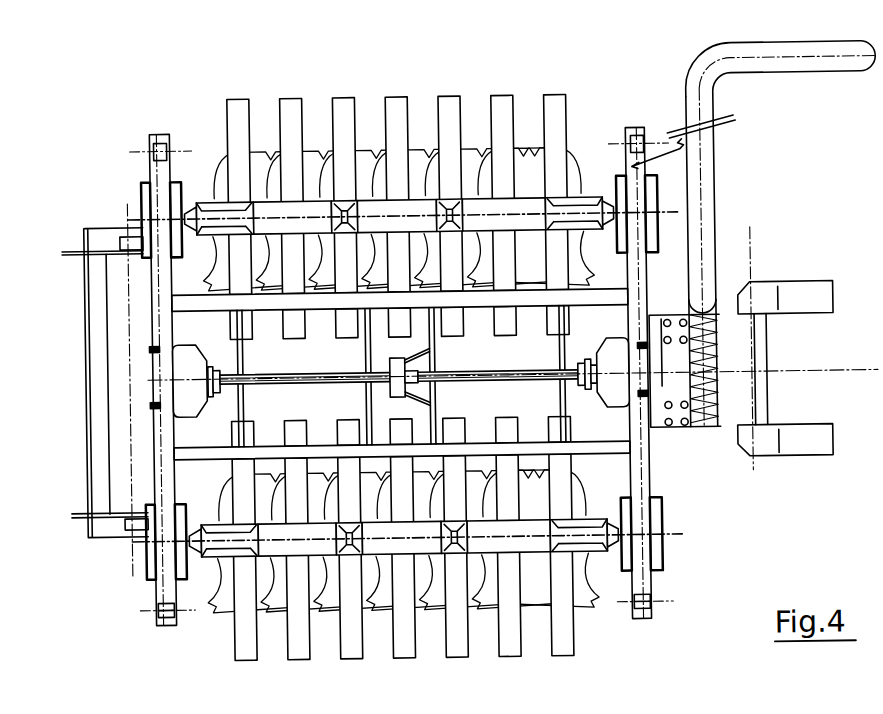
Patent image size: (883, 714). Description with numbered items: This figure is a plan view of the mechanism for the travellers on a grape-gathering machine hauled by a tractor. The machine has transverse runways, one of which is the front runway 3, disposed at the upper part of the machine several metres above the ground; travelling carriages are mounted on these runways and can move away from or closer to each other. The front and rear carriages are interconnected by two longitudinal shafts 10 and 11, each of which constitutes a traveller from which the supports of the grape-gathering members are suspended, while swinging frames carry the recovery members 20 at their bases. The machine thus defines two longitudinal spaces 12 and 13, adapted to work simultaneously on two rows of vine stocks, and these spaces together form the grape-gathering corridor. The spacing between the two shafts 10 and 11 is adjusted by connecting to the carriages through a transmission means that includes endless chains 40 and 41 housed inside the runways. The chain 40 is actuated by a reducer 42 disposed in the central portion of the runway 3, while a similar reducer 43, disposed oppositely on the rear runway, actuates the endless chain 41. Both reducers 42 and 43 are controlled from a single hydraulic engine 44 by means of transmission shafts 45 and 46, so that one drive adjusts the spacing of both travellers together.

The transverse runway 3 is at (163, 174).
The longitudinal shaft 10 is at (215, 210).
The longitudinal shaft 11 is at (224, 552).
The longitudinal space 12 is at (59, 135).
The longitudinal space 13 is at (59, 385).
The recovery member 20 is at (474, 260).
The endless chain 40 is at (154, 318).
The endless chain 41 is at (641, 272).
The reducer 42 is at (180, 358).
The reducer 43 is at (615, 346).
The hydraulic engine 44 is at (396, 370).
The transmission shaft 45 is at (284, 378).
The transmission shaft 46 is at (506, 378).